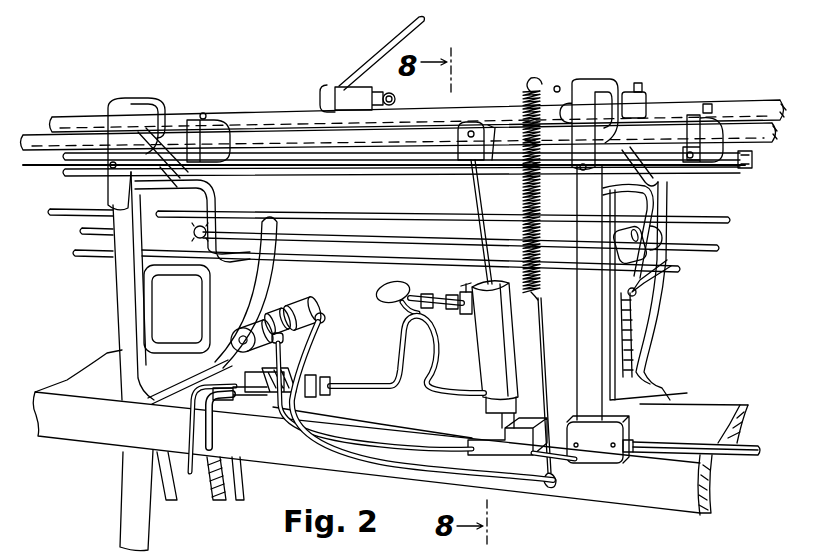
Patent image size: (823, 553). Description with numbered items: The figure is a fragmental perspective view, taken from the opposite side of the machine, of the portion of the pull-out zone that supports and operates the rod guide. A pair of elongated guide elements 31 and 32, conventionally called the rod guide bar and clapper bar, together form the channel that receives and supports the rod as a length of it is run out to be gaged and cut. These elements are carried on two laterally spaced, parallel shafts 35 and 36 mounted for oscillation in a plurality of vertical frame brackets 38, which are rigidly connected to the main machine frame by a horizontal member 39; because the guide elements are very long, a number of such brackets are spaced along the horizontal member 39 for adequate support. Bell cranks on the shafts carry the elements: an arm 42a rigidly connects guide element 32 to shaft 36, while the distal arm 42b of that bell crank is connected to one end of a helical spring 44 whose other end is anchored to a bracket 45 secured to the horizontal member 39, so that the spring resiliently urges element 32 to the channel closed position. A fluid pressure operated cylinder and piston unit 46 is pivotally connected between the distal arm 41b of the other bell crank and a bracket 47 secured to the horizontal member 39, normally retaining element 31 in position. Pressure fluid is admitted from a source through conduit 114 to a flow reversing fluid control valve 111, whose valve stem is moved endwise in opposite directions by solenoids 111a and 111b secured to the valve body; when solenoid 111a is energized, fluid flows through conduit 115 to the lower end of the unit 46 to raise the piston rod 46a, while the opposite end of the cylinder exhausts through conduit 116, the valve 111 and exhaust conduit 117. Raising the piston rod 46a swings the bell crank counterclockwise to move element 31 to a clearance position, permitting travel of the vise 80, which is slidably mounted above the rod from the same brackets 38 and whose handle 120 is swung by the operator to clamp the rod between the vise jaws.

The guide element 31 is at (752, 153).
The guide element 32 is at (694, 172).
The shaft 35 is at (233, 128).
The shaft 36 is at (271, 113).
The vertical frame bracket 38 is at (118, 292).
The horizontal member 39 is at (728, 404).
The arm of bell crank 41b is at (471, 121).
The arm of bell crank 42a is at (135, 188).
The arm of bell crank 42b is at (558, 90).
The helical spring 44 is at (528, 294).
The bracket 45 is at (552, 485).
The cylinder and piston unit 46 is at (482, 351).
The piston rod 46a is at (475, 200).
The bracket 47 is at (528, 425).
The vise 80 is at (341, 85).
The fluid control valve 111 is at (272, 307).
The solenoid 111a is at (302, 295).
The solenoid 111b is at (245, 325).
The conduit 114 is at (214, 428).
The conduit 115 is at (410, 388).
The conduit 116 is at (405, 286).
The exhaust conduit 117 is at (190, 428).
The handle 120 is at (377, 50).